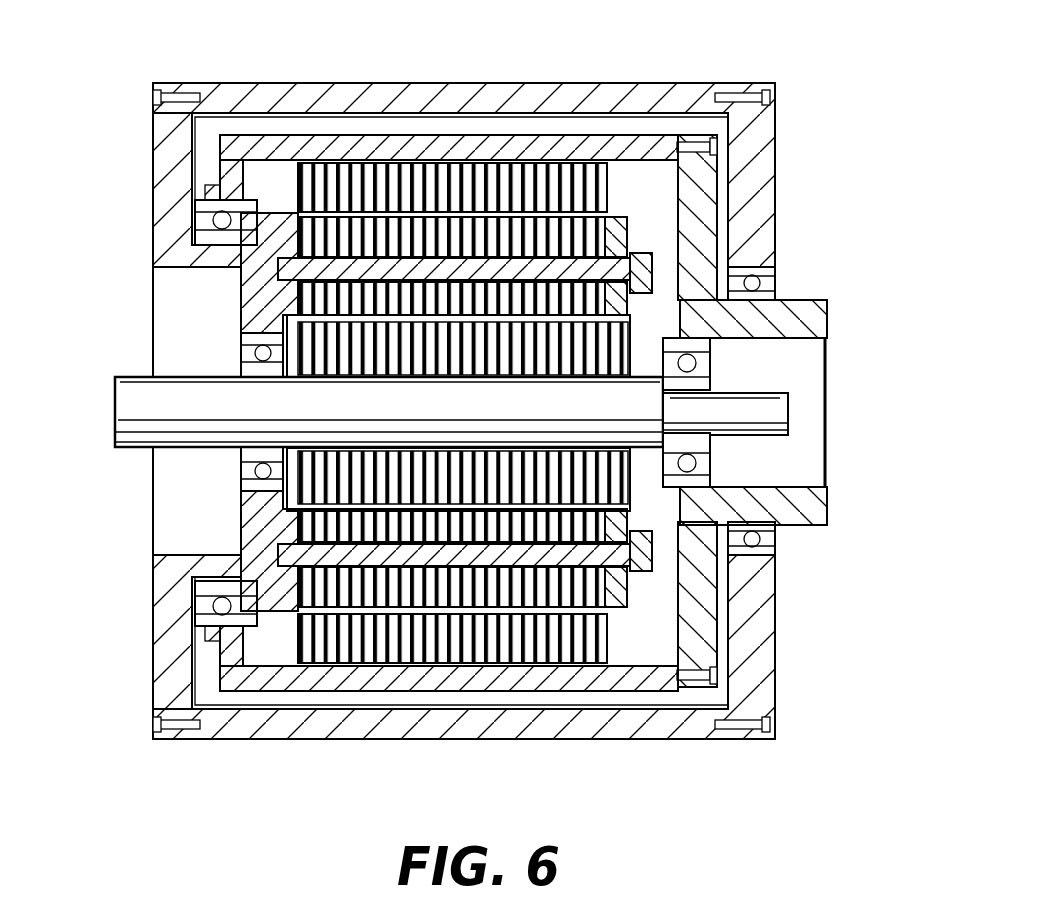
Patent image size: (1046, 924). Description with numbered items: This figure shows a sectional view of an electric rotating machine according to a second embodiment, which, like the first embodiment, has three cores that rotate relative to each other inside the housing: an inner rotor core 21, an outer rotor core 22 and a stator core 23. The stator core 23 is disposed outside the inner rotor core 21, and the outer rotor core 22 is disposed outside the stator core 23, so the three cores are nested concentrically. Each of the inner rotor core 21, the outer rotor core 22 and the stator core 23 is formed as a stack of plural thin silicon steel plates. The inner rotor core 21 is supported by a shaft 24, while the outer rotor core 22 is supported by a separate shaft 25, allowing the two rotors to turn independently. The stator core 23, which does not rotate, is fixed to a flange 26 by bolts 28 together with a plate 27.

The inner rotor core 21 is at (363, 347).
The outer rotor core 22 is at (528, 180).
The stator core 23 is at (435, 230).
The shaft 24 is at (790, 410).
The shaft 25 is at (812, 313).
The flange 26 is at (162, 243).
The plate 27 is at (612, 218).
The bolts 28 is at (648, 268).